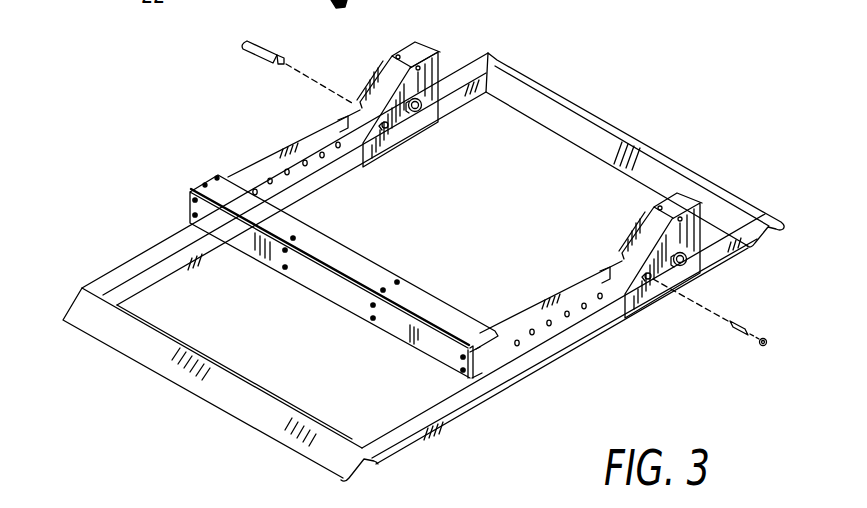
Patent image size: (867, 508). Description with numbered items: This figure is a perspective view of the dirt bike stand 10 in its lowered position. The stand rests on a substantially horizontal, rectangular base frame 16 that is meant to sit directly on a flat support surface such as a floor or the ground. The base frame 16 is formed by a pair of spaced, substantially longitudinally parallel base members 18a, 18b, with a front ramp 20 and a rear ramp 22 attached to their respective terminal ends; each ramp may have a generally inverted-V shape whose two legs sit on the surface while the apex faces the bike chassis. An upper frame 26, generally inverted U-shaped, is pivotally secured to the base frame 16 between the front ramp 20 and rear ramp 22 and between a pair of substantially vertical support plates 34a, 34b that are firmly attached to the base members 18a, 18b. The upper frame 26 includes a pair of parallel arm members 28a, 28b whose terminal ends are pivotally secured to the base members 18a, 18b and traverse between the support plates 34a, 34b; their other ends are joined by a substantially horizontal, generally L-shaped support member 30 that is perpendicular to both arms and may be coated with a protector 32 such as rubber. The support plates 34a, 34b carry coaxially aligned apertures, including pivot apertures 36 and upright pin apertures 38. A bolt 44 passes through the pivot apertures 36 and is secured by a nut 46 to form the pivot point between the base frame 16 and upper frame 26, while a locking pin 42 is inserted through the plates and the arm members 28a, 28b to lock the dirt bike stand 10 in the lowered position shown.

The dirt bike stand 10 is at (691, 41).
The base frame 16 is at (408, 252).
The base member 18a is at (143, 267).
The base member 18b is at (452, 407).
The front ramp 20 is at (577, 122).
The rear ramp 22 is at (242, 402).
The upper frame 26 is at (419, 254).
The arm member 28a is at (258, 165).
The arm member 28b is at (547, 330).
The support member 30 is at (477, 357).
The protector 32 is at (327, 286).
The support plate 34a is at (625, 243).
The support plate 34b is at (637, 300).
The pivot apertures 36 is at (418, 68).
The upright pin apertures 38 is at (407, 46).
The locking pin 42 is at (247, 53).
The bolt 44 is at (422, 112).
The nut 46 is at (686, 259).